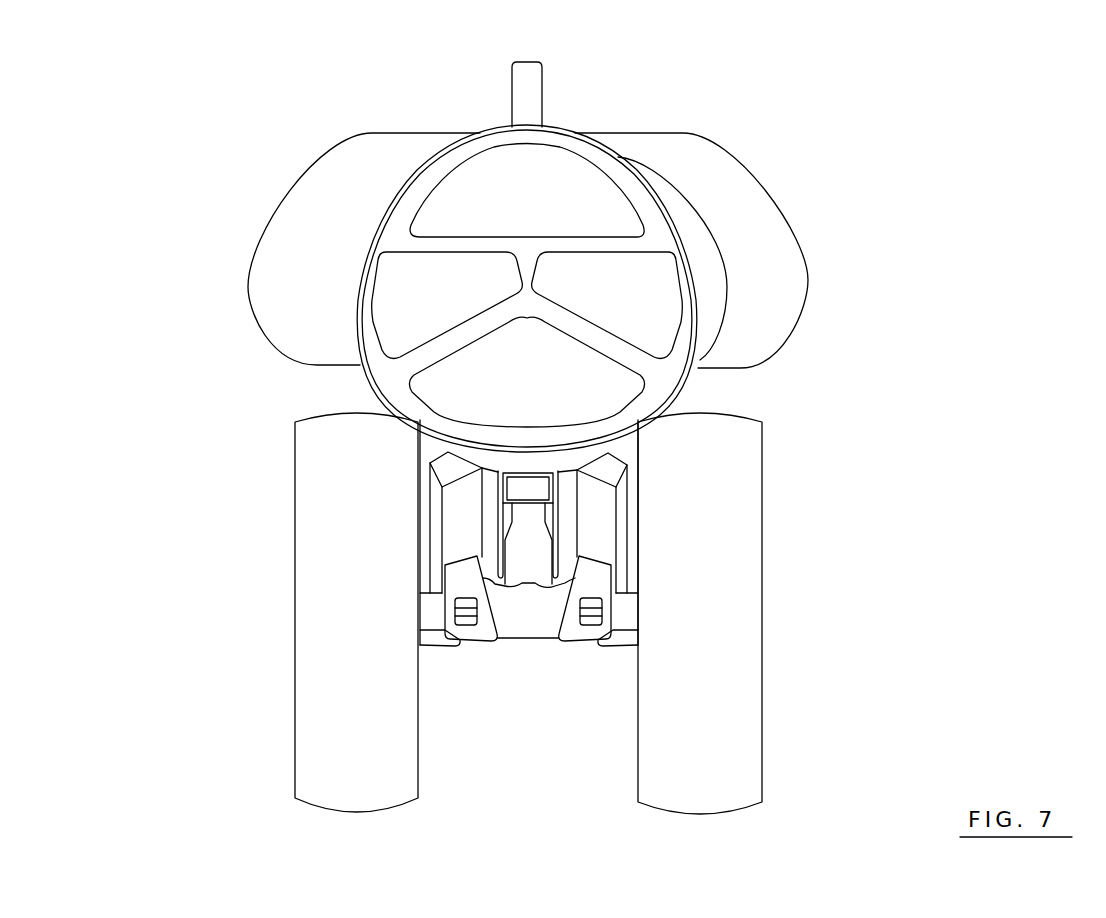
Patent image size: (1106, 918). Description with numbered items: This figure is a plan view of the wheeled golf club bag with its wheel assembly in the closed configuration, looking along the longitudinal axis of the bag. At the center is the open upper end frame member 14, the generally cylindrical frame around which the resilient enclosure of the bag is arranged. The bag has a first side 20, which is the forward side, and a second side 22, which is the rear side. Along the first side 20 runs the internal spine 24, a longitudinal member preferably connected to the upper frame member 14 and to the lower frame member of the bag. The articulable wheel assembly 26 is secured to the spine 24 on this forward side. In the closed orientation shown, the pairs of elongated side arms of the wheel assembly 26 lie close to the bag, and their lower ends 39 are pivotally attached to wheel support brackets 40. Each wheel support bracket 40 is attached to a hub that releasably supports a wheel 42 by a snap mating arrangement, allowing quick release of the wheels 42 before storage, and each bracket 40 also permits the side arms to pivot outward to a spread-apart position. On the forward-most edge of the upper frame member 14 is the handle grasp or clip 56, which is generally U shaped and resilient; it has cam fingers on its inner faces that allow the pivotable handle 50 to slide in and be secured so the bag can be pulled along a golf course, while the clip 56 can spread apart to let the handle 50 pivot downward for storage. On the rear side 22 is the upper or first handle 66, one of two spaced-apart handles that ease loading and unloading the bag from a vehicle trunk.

The open upper end frame member 14 is at (599, 282).
The first side 20 is at (395, 400).
The second side 22 is at (562, 123).
The internal spine 24 is at (526, 375).
The articulable wheel assembly 26 is at (425, 533).
The lower end 39 is at (838, 598).
The wheel support bracket 40 is at (593, 678).
The wheel 42 is at (527, 613).
The handle 50 is at (383, 507).
The handle grasp or clip 56 is at (676, 601).
The upper or first handle 66 is at (523, 91).